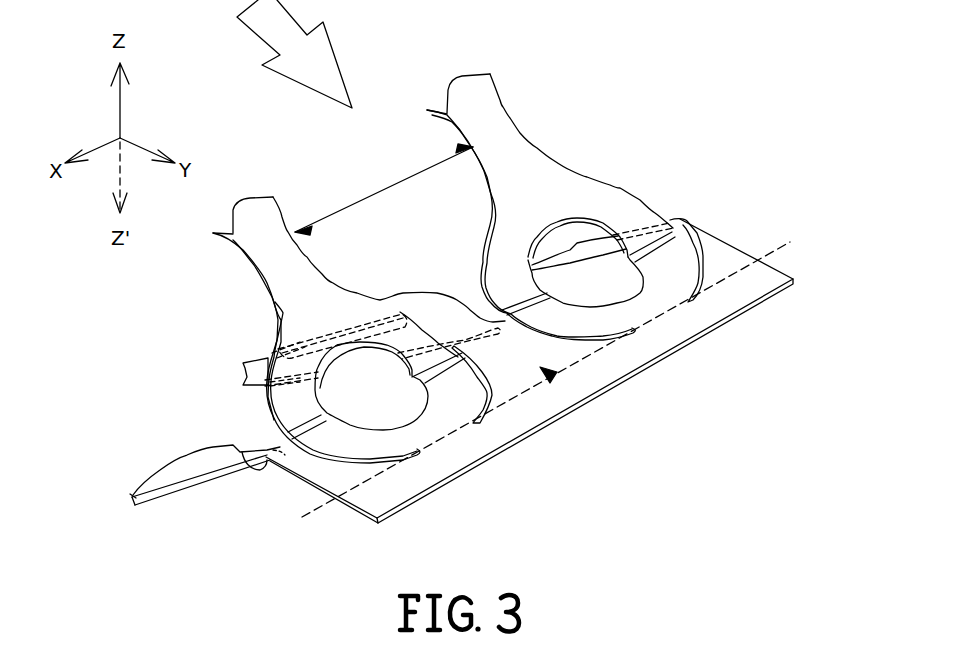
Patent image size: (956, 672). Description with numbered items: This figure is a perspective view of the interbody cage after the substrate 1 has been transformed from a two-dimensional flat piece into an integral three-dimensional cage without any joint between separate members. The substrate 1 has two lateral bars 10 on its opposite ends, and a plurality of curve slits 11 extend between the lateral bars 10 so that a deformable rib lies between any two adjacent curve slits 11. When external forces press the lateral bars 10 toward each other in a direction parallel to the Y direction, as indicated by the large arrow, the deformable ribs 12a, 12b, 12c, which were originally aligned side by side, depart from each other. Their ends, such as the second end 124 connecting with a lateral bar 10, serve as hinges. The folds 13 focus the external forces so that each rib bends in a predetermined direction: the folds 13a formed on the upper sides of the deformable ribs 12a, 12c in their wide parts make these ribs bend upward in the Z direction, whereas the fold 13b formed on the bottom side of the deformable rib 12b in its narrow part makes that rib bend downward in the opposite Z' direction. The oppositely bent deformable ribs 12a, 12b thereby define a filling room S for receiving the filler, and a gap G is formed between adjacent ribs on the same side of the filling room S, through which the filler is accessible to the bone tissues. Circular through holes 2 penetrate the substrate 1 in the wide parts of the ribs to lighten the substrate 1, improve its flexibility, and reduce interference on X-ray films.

The substrate 1 is at (725, 255).
The lateral bar 10 is at (640, 353).
The curve slit 11 is at (487, 402).
The deformable rib 12a is at (490, 117).
The deformable rib 12b is at (417, 292).
The deformable rib 12c is at (260, 217).
The second end 124 is at (555, 368).
The fold 13 is at (200, 332).
The fold 13a is at (265, 408).
The fold 13b is at (240, 460).
The through hole 2 is at (397, 412).
The gap G is at (386, 189).
The filling room S is at (233, 301).